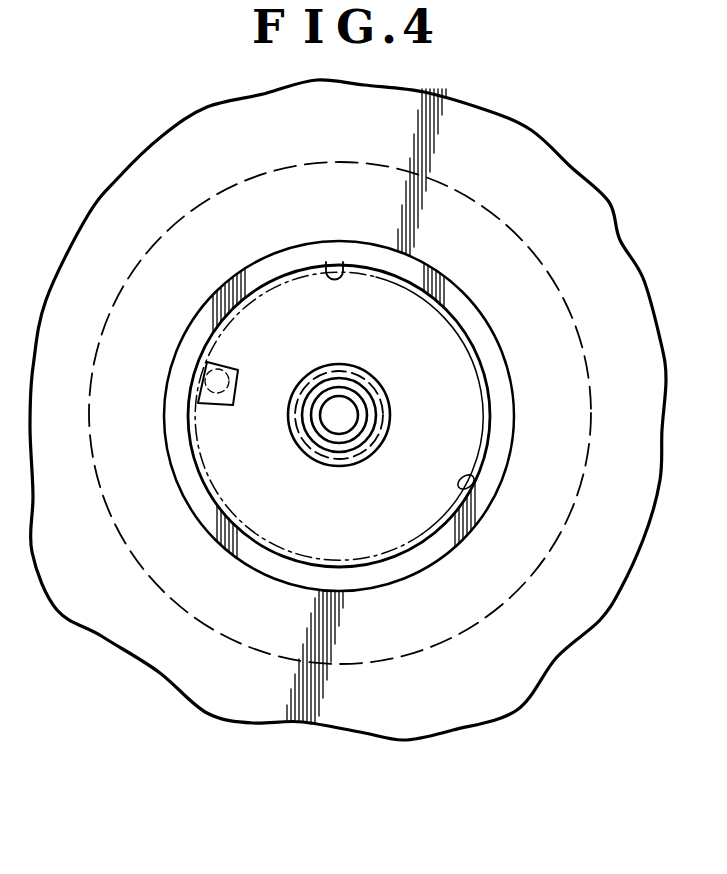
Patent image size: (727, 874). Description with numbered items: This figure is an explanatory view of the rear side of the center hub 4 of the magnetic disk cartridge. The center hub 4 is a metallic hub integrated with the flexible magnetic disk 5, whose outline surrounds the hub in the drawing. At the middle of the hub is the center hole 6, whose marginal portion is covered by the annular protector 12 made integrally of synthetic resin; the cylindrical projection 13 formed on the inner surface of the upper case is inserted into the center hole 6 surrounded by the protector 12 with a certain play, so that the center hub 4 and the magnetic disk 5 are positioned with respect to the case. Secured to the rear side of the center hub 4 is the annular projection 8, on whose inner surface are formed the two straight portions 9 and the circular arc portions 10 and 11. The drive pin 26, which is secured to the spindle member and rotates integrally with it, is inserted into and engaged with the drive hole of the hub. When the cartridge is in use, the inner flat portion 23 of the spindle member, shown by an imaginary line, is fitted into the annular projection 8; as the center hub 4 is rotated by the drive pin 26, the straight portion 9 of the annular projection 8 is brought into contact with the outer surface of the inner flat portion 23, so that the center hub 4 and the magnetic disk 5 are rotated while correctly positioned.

The center hub 4 is at (137, 508).
The flexible magnetic disk 5 is at (538, 643).
The center hole 6 is at (342, 452).
The annular projection 8 is at (497, 361).
The straight portion 9 is at (243, 292).
The circular arc portion 10 is at (462, 480).
The circular arc portion 11 is at (322, 264).
The annular protector 12 is at (295, 440).
The cylindrical projection 13 is at (358, 418).
The inner flat portion 23 is at (487, 429).
The drive pin 26 is at (213, 378).